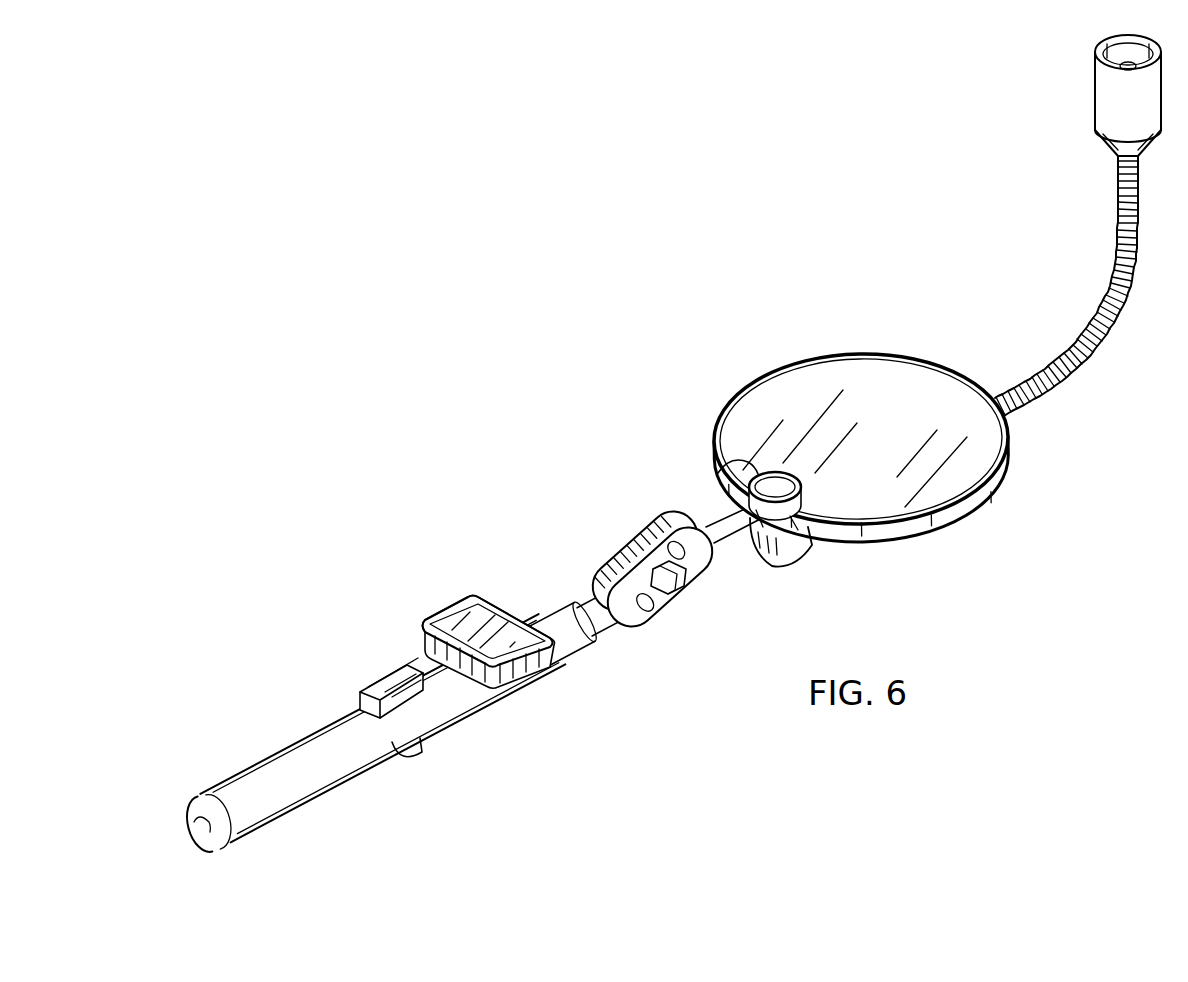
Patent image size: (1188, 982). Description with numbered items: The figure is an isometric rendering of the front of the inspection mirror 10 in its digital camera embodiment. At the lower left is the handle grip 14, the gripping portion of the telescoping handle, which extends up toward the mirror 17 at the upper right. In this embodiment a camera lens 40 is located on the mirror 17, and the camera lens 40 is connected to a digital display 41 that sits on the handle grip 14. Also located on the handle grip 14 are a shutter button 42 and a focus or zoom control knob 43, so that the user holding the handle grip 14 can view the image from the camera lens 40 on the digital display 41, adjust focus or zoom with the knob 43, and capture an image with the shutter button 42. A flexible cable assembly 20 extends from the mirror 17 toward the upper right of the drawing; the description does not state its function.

The inspection mirror 10 is at (500, 437).
The handle grip 14 is at (300, 757).
The mirror 17 is at (805, 387).
The fiber optic light cable 20 is at (1005, 236).
The camera lens 40 is at (748, 477).
The digital display 41 is at (468, 620).
The shutter button 42 is at (422, 745).
The focus or zoom control knob 43 is at (395, 667).